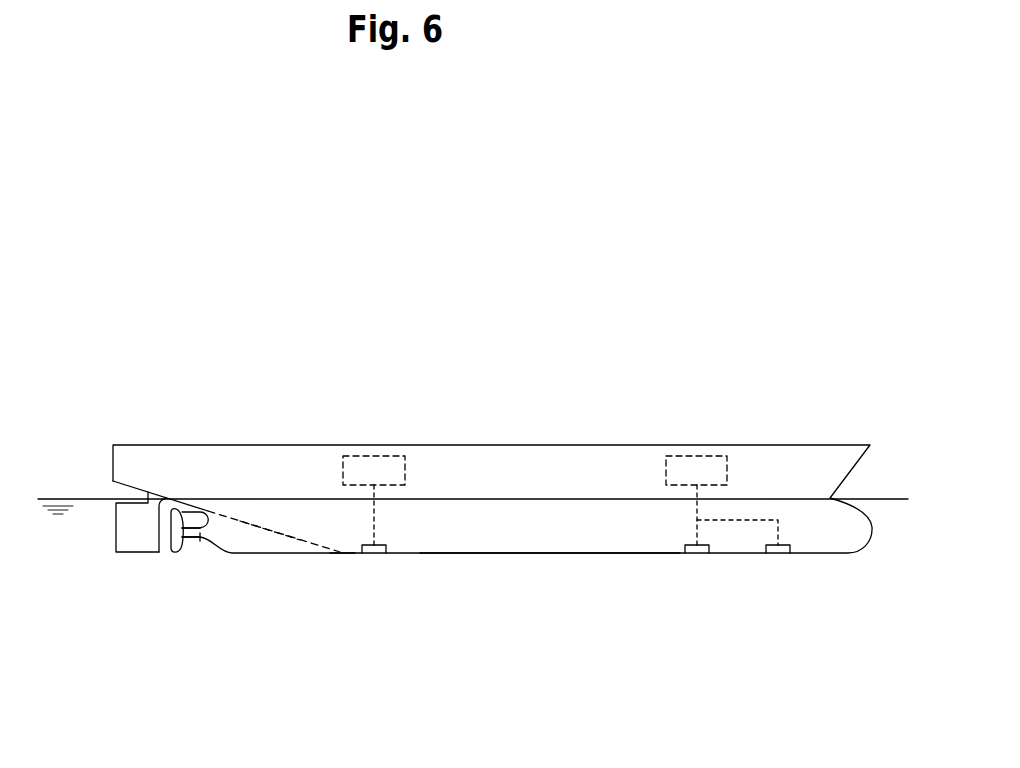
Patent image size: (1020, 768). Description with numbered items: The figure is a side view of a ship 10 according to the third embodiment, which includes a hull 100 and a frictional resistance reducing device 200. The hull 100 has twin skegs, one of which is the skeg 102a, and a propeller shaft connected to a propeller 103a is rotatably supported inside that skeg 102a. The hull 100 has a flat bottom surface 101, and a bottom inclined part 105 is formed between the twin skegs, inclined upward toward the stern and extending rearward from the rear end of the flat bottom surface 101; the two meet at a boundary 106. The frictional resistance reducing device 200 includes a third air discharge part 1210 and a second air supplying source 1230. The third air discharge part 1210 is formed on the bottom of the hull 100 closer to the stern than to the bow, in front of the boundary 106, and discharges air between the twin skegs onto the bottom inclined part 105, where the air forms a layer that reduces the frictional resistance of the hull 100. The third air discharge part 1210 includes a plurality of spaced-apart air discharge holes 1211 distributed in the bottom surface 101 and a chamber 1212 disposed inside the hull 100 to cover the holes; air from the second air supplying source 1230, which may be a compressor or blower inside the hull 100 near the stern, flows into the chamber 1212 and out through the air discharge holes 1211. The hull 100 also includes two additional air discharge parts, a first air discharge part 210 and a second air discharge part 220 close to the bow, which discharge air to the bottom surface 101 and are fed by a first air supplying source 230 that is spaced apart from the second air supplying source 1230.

The ship 10 is at (63, 145).
The hull 100 is at (591, 444).
The bottom surface 101 is at (560, 553).
The skeg 102a is at (200, 541).
The propeller 103a is at (171, 542).
The bottom inclined part 105 is at (272, 531).
The boundary 106 is at (342, 553).
The frictional resistance reducing device 200 is at (287, 337).
The first air discharge part 210 is at (779, 555).
The second air discharge part 220 is at (697, 555).
The first air supplying source 230 is at (696, 456).
The third air discharge part 1210 is at (414, 696).
The air discharge holes 1211 is at (377, 553).
The chamber 1212 is at (387, 547).
The second air supplying source 1230 is at (374, 456).